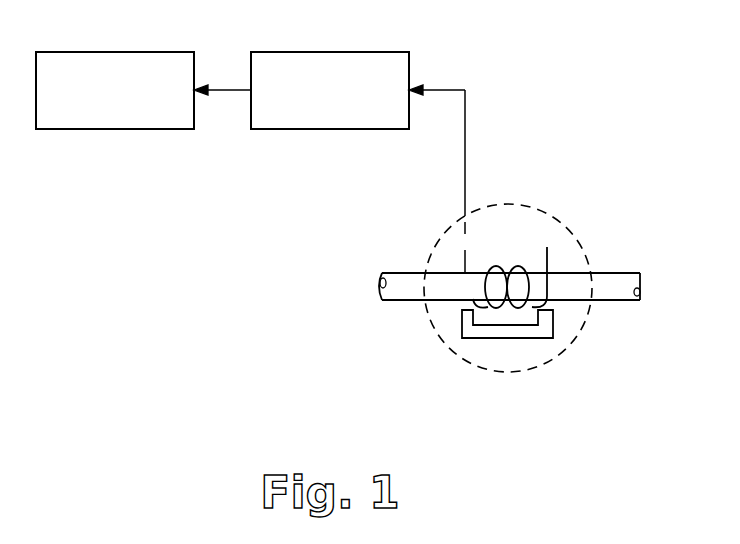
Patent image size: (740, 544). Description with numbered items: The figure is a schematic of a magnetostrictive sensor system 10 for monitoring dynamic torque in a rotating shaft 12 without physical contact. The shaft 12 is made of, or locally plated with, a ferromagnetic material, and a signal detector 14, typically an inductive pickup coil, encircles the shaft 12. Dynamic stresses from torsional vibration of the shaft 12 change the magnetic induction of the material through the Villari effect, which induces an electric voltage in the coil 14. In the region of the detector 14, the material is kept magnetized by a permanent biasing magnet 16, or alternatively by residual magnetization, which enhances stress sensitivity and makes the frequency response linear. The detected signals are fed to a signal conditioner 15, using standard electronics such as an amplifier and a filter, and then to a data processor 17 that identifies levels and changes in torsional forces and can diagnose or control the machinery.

The sensor assembly 10 is at (448, 353).
The shaft 12 is at (378, 277).
The signal detector 14 is at (552, 250).
The signal conditioner 15 is at (323, 52).
The permanent biasing magnet 16 is at (510, 338).
The data processor 17 is at (109, 52).